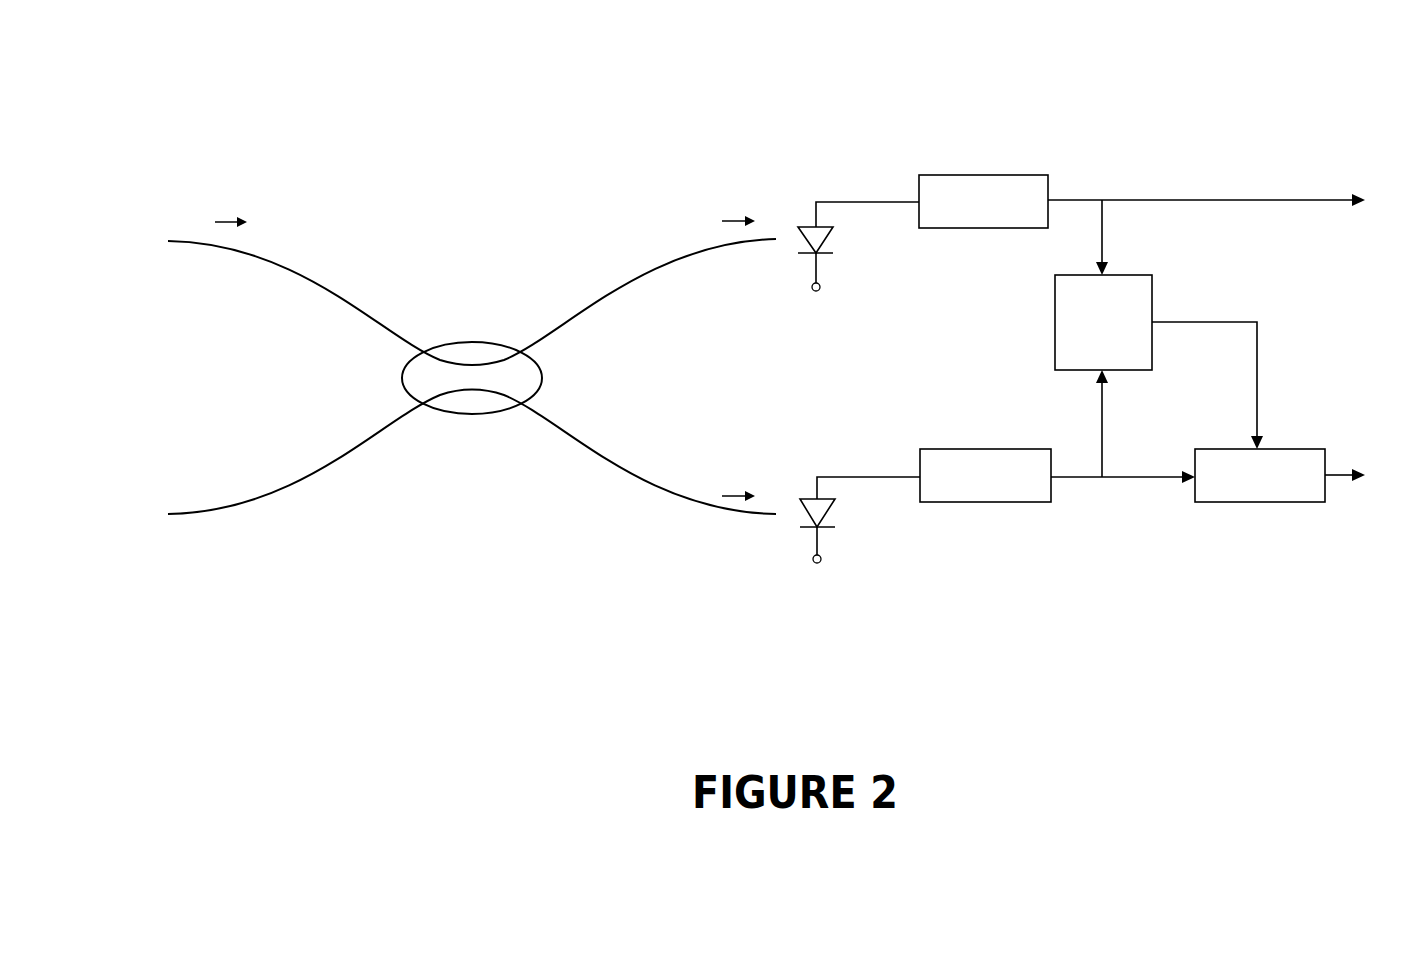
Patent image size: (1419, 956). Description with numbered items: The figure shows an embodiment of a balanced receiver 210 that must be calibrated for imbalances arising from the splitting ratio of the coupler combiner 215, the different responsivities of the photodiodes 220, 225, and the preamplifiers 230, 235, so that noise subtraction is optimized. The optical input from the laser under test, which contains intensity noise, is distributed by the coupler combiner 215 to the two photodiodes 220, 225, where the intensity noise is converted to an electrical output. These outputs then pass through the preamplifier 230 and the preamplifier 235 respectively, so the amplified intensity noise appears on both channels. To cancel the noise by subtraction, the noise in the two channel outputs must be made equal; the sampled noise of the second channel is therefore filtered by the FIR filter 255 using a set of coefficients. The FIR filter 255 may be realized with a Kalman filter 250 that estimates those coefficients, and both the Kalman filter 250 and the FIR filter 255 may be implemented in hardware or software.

The balanced receiver 210 is at (732, 113).
The coupler combiner 215 is at (475, 350).
The photodiode 220 is at (830, 237).
The photodiode 225 is at (832, 510).
The preamplifier 230 is at (988, 182).
The preamplifier 235 is at (983, 455).
The Kalman filter 250 is at (1145, 290).
The FIR filter 255 is at (1300, 492).